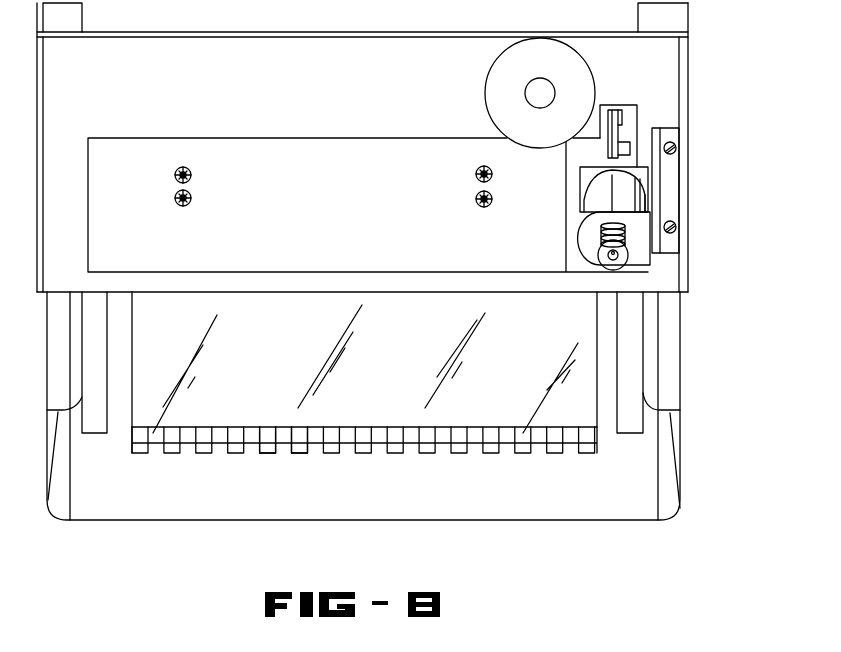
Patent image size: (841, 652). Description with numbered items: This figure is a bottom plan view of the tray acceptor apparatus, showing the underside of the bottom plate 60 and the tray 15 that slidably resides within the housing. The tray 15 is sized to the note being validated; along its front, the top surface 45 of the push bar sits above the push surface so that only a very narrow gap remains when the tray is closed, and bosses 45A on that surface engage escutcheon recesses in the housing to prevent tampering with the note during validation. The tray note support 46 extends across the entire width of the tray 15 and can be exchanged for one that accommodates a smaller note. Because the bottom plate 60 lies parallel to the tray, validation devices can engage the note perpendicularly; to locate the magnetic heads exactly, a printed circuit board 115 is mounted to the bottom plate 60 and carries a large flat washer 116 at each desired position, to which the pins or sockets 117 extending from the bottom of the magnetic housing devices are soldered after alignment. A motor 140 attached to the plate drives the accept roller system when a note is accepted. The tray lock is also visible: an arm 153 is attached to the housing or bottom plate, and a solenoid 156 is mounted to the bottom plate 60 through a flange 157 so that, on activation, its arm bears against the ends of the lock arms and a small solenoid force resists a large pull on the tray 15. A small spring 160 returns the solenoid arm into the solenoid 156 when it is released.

The tray 15 is at (690, 505).
The top surface 45 is at (379, 433).
The bosses 45A is at (297, 437).
The tray note support 46 is at (580, 396).
The bottom plate 60 is at (267, 56).
The printed circuit board 115 is at (353, 250).
The flat washer 116 is at (190, 197).
The pins or sockets 117 is at (177, 199).
The motor 140 is at (546, 50).
The arm 153 is at (611, 140).
The solenoid 156 is at (642, 197).
The flange 157 is at (676, 161).
The spring 160 is at (626, 237).